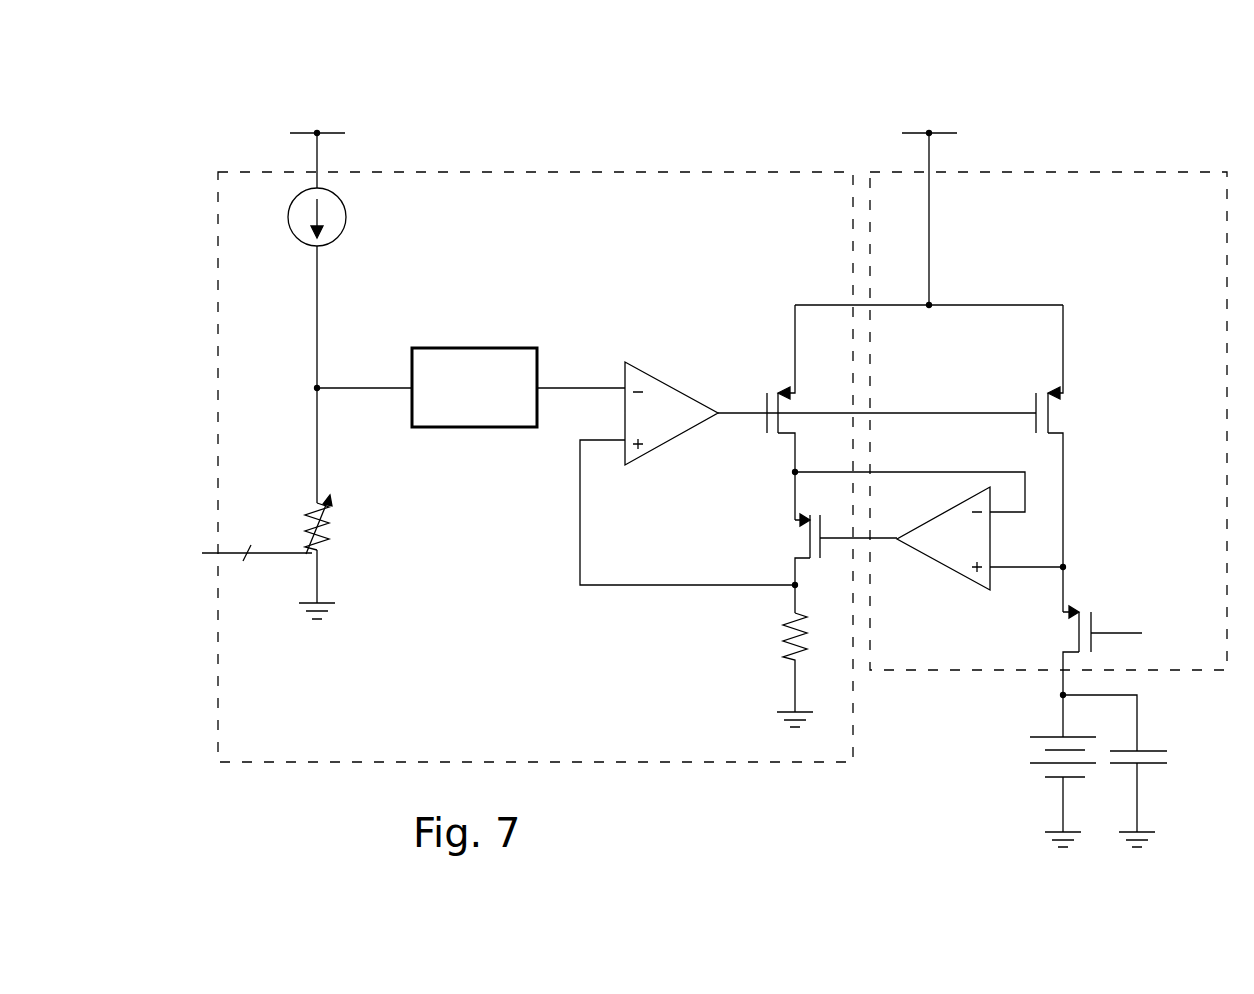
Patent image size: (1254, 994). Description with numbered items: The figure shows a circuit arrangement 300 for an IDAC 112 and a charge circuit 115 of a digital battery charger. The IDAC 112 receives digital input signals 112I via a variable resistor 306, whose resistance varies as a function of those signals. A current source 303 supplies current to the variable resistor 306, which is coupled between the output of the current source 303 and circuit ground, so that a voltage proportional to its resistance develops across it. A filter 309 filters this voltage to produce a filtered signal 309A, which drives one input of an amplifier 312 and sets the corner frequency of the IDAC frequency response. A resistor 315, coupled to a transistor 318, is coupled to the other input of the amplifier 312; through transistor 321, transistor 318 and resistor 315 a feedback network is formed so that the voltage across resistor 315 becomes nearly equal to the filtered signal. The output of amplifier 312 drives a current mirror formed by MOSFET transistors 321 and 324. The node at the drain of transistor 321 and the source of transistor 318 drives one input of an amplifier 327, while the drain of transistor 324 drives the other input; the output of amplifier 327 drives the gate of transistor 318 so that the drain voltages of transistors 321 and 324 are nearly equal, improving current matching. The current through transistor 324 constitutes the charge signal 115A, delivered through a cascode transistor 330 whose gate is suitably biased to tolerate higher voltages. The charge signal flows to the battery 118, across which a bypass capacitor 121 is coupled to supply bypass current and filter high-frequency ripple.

The circuit arrangement 300 is at (730, 88).
The IDAC 112 is at (782, 764).
The input signals 112I is at (282, 558).
The current source 303 is at (296, 246).
The variable resistor 306 is at (330, 540).
The filter 309 is at (475, 348).
The filtered signal 309A is at (587, 366).
The amplifier 312 is at (673, 385).
The resistor 315 is at (786, 634).
The transistor 318 is at (798, 556).
The transistor 321 is at (775, 435).
The charge circuit 115 is at (1100, 172).
The transistor 324 is at (1062, 430).
The amplifier 327 is at (942, 570).
The transistor 330 is at (1068, 650).
The charge signal 115A is at (1063, 718).
The battery 118 is at (1052, 780).
The bypass capacitor 121 is at (1150, 750).